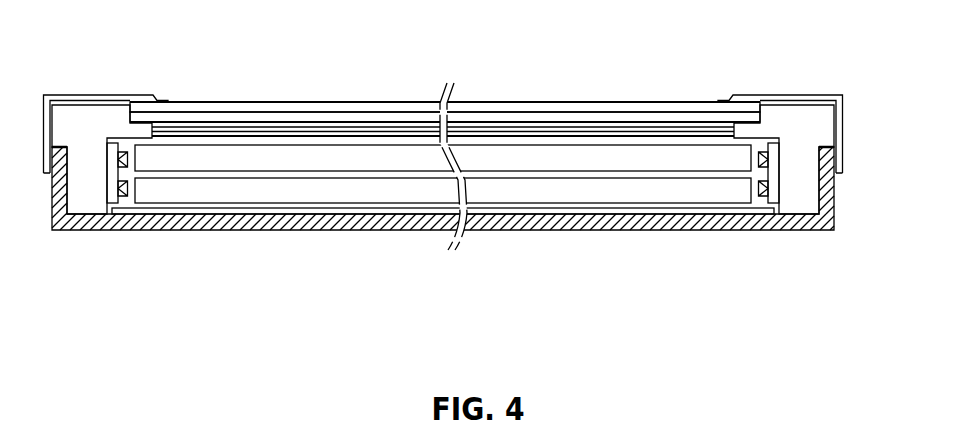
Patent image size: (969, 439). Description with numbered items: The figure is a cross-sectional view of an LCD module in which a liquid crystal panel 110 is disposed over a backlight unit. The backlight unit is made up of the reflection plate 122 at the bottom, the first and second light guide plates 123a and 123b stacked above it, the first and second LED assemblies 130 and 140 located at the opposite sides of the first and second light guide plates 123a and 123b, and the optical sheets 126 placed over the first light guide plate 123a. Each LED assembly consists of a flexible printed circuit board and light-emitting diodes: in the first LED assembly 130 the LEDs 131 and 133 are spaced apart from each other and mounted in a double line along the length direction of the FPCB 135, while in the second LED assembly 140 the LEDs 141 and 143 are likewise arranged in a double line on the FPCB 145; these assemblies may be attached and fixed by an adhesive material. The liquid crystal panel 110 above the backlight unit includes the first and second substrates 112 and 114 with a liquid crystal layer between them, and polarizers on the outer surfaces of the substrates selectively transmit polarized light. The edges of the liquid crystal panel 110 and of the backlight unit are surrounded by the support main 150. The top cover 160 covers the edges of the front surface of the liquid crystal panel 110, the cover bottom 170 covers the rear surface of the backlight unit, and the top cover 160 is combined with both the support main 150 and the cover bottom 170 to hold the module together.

The liquid crystal panel 110 is at (445, 67).
The first substrate 112 is at (566, 117).
The second substrate 114 is at (525, 107).
The reflection plate 122 is at (237, 211).
The first light guide plate 123a is at (287, 162).
The second light guide plate 123b is at (345, 195).
The optical sheets 126 is at (390, 142).
The first LED assembly 130 is at (123, 236).
The LED 131 is at (128, 160).
The LED 133 is at (122, 196).
The FPCB 135 is at (107, 178).
The second LED assembly 140 is at (756, 228).
The LED 141 is at (758, 158).
The LED 143 is at (760, 193).
The FPCB 145 is at (779, 193).
The support main 150 is at (815, 128).
The top cover 160 is at (795, 97).
The cover bottom 170 is at (836, 196).